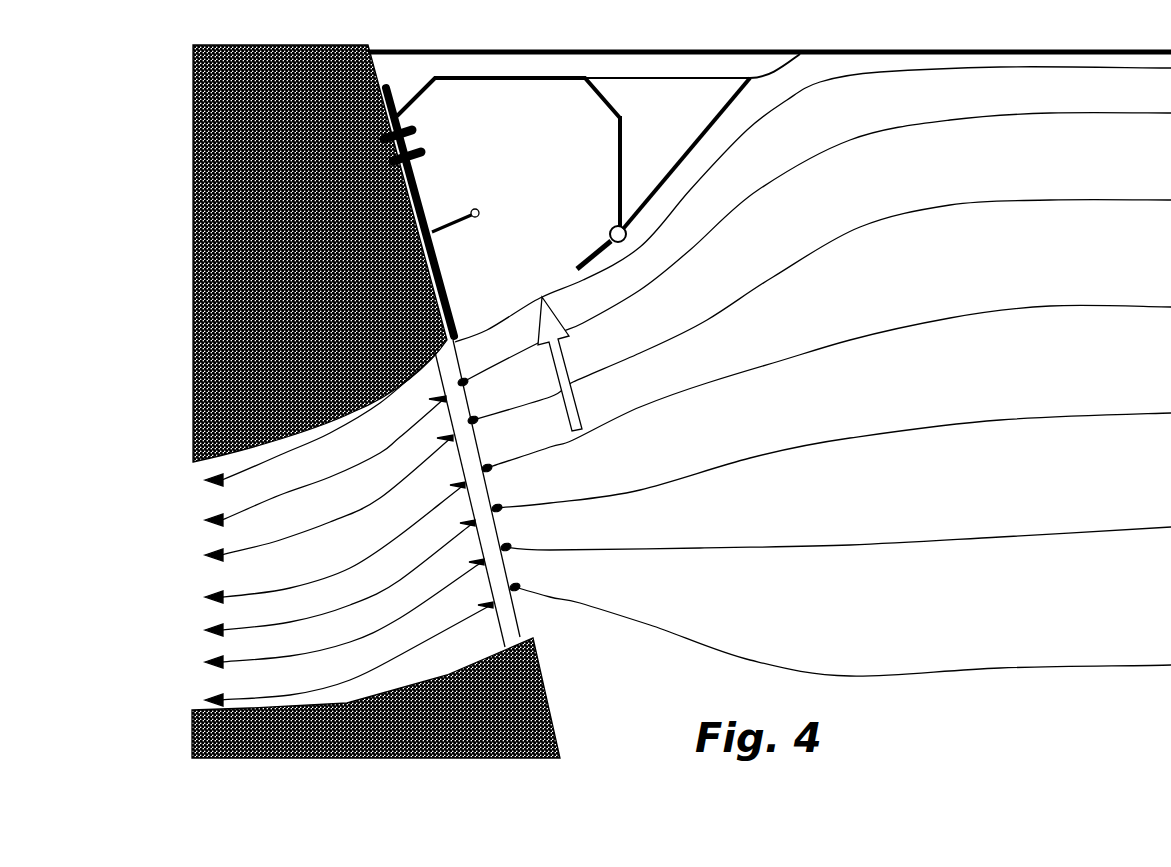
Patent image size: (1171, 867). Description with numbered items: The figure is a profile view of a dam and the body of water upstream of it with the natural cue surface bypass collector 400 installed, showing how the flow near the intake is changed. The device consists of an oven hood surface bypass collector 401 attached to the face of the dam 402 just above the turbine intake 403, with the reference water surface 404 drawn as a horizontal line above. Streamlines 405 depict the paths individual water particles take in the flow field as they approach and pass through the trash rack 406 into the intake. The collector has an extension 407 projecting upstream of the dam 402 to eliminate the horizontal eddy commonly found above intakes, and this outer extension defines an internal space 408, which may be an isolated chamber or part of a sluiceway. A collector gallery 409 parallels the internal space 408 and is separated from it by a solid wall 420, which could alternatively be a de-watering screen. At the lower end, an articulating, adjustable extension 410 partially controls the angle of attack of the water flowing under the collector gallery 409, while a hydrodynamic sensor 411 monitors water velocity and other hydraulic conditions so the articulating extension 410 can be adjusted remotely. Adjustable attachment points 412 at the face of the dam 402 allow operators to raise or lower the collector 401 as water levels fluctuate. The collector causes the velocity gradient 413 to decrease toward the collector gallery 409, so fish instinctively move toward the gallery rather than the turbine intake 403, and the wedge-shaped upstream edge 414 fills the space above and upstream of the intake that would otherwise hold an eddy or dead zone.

The natural cue surface bypass collector 400 is at (615, 66).
The oven hood surface bypass collector 401 is at (560, 72).
The dam 402 is at (344, 46).
The turbine intake 403 is at (347, 562).
The reference water surface 404 is at (758, 52).
The streamlines 405 is at (1003, 304).
The trash rack 406 is at (511, 622).
The extension 407 is at (794, 54).
The internal space 408 is at (690, 115).
The collector gallery 409 is at (537, 118).
The articulating, adjustable extension 410 is at (577, 268).
The hydrodynamic sensor 411 is at (482, 214).
The adjustable attachment points 412 is at (416, 165).
The velocity gradient 413 is at (572, 382).
The upstream edge 414 is at (694, 145).
The solid wall 420 is at (613, 177).